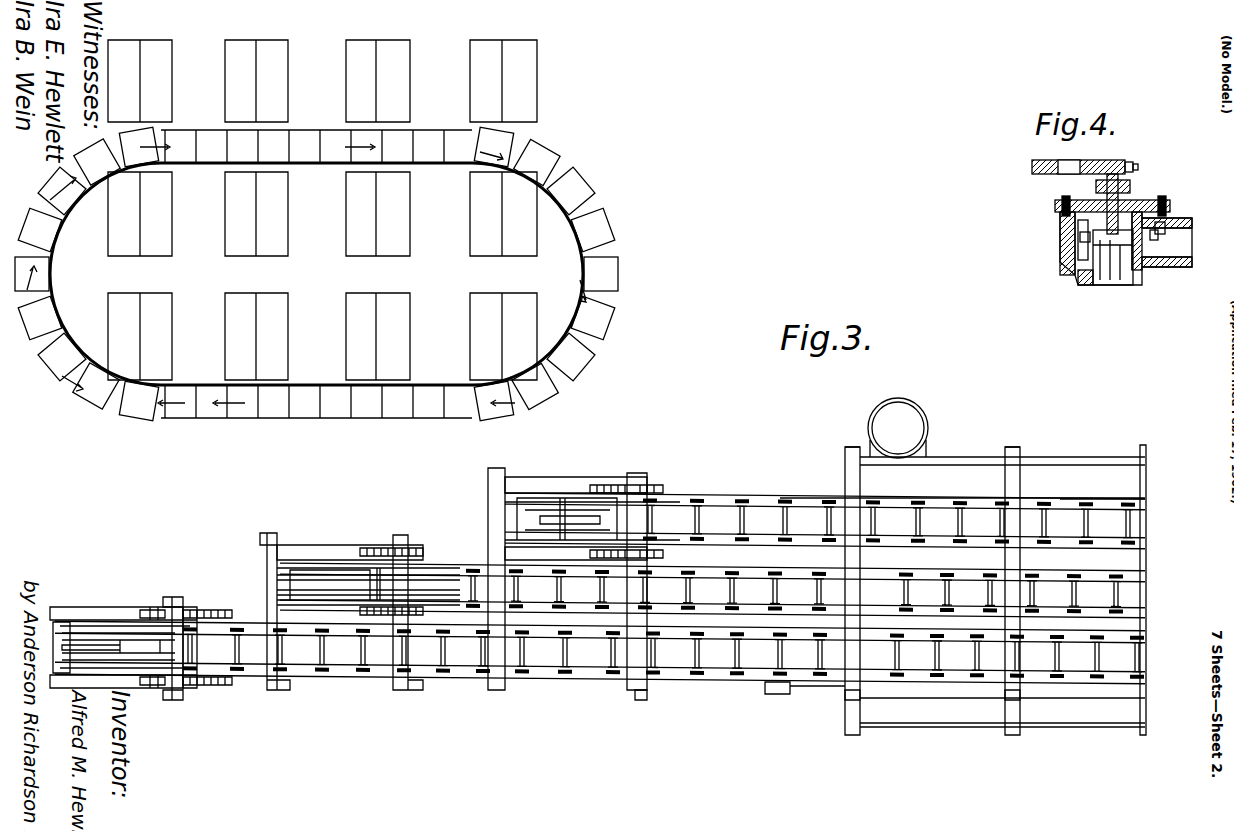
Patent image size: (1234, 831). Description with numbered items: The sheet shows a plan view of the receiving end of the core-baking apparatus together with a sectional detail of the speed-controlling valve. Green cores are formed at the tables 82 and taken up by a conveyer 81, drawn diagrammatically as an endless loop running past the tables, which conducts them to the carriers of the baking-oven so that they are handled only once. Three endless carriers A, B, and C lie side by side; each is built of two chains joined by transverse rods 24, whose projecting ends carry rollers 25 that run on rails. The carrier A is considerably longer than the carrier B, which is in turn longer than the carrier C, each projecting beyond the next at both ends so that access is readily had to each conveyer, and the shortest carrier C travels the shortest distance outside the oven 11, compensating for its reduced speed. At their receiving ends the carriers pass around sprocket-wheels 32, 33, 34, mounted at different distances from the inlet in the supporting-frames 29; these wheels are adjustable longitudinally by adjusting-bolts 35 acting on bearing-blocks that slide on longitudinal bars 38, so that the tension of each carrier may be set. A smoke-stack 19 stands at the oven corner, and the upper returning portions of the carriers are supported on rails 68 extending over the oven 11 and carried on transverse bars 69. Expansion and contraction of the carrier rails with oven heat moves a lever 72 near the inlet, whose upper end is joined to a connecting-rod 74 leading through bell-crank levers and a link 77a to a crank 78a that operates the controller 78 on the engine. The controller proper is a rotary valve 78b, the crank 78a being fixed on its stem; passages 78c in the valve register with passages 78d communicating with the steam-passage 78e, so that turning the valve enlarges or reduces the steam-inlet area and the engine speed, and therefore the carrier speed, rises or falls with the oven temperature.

In FIG. 3, the oven 11 is at (1002, 472).
In FIG. 3, the smoke-stack 19 is at (898, 428).
In FIG. 3, the transverse rods 24 is at (830, 523).
In FIG. 3, the rollers 25 is at (780, 500).
In FIG. 3, the supporting-frames 29 is at (170, 598).
In FIG. 3, the sprocket-wheel 32 is at (97, 630).
In FIG. 3, the sprocket-wheel 33 is at (312, 572).
In FIG. 3, the sprocket-wheel 34 is at (545, 508).
In FIG. 3, the adjusting-bolts 35 is at (200, 610).
In FIG. 3, the longitudinal bars 38 is at (126, 625).
In FIG. 3, the rails 68 is at (1070, 500).
In FIG. 3, the transverse bars 69 is at (858, 485).
In FIG. 3, the lever 72 is at (768, 692).
In FIG. 3, the connecting-rod 74 is at (920, 703).
In FIG. 4, the link 77a is at (1032, 162).
In FIG. 4, the controller 78 is at (1140, 205).
In FIG. 4, the crank 78a is at (1068, 165).
In FIG. 4, the rotary valve 78b is at (1125, 280).
In FIG. 4, the passages 78c is at (1198, 205).
In FIG. 4, the passages 78d is at (1200, 232).
In FIG. 4, the steam-passage 78e is at (1062, 212).
In FIG. 3, the conveyer 81 is at (322, 160).
In FIG. 3, the tables 82 is at (235, 80).
In FIG. 3, the endless carrier A is at (700, 645).
In FIG. 3, the endless carrier B is at (698, 580).
In FIG. 3, the endless carrier C is at (700, 513).